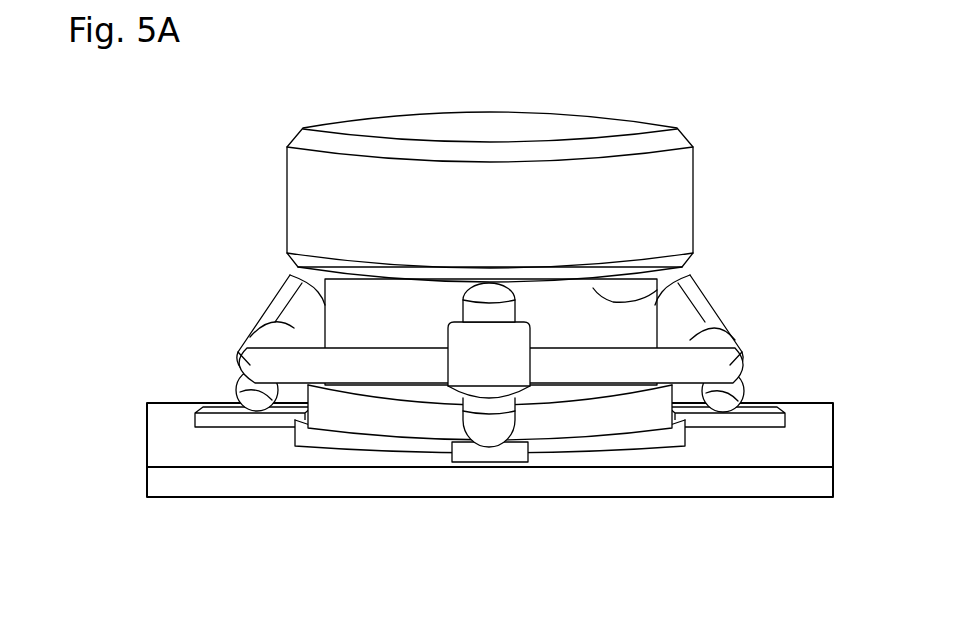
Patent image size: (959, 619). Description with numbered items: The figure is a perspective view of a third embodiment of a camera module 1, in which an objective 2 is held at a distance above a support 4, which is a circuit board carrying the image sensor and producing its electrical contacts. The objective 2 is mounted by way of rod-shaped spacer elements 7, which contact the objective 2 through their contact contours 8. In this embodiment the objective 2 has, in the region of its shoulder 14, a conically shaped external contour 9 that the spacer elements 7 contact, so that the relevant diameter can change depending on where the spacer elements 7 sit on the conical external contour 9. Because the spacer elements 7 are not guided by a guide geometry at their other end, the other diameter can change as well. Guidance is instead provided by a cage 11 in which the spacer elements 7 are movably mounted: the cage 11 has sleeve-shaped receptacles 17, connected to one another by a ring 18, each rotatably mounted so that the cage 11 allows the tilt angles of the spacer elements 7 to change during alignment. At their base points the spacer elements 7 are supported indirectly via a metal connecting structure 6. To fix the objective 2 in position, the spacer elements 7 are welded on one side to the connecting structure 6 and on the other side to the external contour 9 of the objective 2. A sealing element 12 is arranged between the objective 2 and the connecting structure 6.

The camera module 1 is at (798, 102).
The objective 2 is at (612, 123).
The support 4 is at (670, 480).
The connecting structure 6 is at (487, 463).
The spacer elements 7 is at (252, 381).
The contact contours 8 is at (248, 404).
The conical external contour 9 is at (432, 297).
The cage 11 is at (460, 366).
The sealing element 12 is at (362, 418).
The shoulder 14 is at (580, 297).
The sleeve-shaped receptacles 17 is at (265, 312).
The ring 18 is at (266, 346).